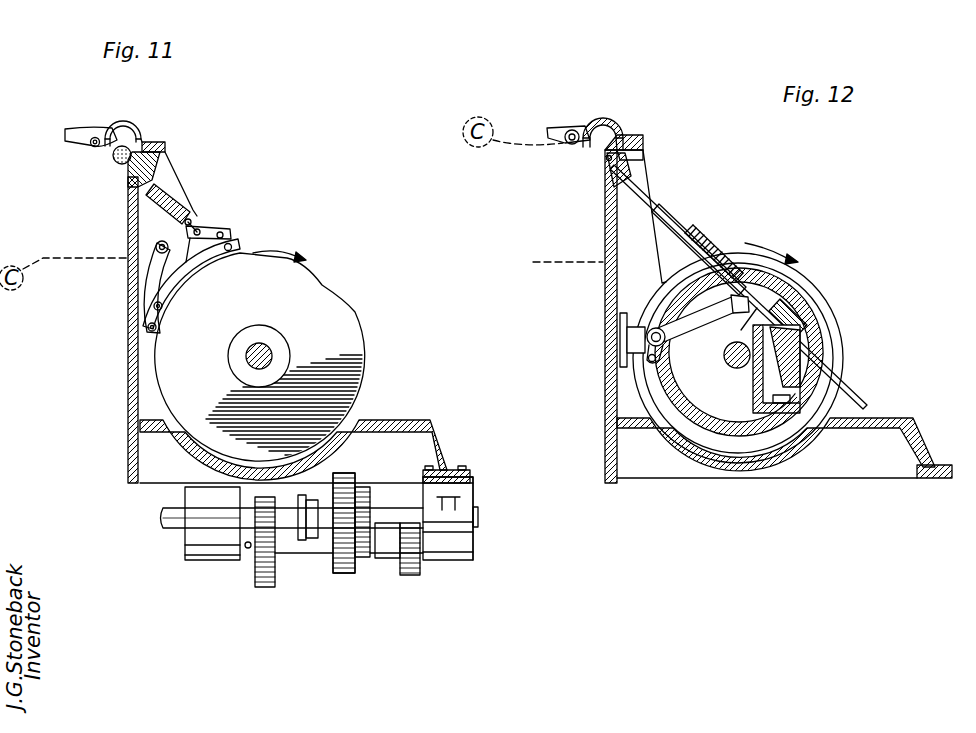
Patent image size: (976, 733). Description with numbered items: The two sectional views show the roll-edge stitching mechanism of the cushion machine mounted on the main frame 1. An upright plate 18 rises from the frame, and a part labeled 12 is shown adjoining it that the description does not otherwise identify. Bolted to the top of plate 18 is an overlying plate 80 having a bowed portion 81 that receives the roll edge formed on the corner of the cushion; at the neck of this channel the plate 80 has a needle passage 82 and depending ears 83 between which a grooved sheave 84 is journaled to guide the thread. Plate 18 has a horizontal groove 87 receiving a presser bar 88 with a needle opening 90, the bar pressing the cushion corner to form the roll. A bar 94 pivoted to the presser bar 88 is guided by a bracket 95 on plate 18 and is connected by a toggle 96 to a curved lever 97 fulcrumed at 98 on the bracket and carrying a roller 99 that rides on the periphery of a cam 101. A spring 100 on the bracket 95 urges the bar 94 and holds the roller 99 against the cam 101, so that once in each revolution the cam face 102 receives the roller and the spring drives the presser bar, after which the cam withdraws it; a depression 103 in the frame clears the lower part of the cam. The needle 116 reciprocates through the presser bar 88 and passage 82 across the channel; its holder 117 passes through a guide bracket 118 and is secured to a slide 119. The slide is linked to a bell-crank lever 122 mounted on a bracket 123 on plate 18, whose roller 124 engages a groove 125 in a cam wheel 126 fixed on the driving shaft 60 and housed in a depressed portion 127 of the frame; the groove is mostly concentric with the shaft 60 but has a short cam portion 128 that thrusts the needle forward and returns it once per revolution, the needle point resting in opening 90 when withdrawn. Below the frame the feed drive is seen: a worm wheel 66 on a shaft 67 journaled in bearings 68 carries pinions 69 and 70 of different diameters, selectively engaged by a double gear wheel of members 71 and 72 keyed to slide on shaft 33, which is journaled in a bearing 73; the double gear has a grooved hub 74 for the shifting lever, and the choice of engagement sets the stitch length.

In FIG. 11, the frame base 1 is at (443, 434).
In FIG. 12, the frame base 1 is at (917, 433).
In FIG. 12, the inclined plate 12 is at (644, 216).
In FIG. 11, the plate 18 is at (128, 358).
In FIG. 12, the plate 18 is at (605, 228).
In FIG. 11, the shaft 33 is at (160, 517).
In FIG. 11, the driving shaft 60 is at (266, 350).
In FIG. 12, the driving shaft 60 is at (800, 293).
In FIG. 11, the worm wheel 66 is at (268, 584).
In FIG. 11, the shaft 67 is at (381, 556).
In FIG. 11, the bearings 68 is at (223, 563).
In FIG. 11, the gear pinion 69 is at (343, 574).
In FIG. 11, the gear pinion 70 is at (417, 577).
In FIG. 11, the gear wheel member 71 is at (343, 483).
In FIG. 11, the gear wheel member 72 is at (361, 484).
In FIG. 11, the bearing 73 is at (476, 499).
In FIG. 11, the grooved hub 74 is at (312, 541).
In FIG. 11, the plate 80 is at (79, 128).
In FIG. 12, the plate 80 is at (561, 128).
In FIG. 11, the bowed portion 81 is at (134, 123).
In FIG. 12, the bowed portion 81 is at (601, 120).
In FIG. 12, the needle passage 82 is at (573, 132).
In FIG. 11, the depending ears 83 is at (88, 147).
In FIG. 12, the grooved sheave 84 is at (569, 131).
In FIG. 12, the horizontal groove 87 is at (610, 170).
In FIG. 11, the presser bar 88 is at (125, 165).
In FIG. 12, the presser bar 88 is at (620, 158).
In FIG. 12, the needle opening 90 is at (606, 158).
In FIG. 11, the bar 94 is at (210, 227).
In FIG. 11, the bracket 95 is at (174, 203).
In FIG. 11, the toggle 96 is at (232, 236).
In FIG. 11, the curved lever 97 is at (232, 250).
In FIG. 11, the fulcrum 98 is at (151, 307).
In FIG. 11, the roller 99 is at (148, 330).
In FIG. 11, the spring 100 is at (156, 245).
In FIG. 11, the cam 101 is at (260, 357).
In FIG. 11, the cam face 102 is at (318, 283).
In FIG. 11, the depression 103 is at (175, 421).
In FIG. 12, the needle 116 is at (650, 188).
In FIG. 12, the needle holder 117 is at (668, 216).
In FIG. 12, the guide bracket 118 is at (808, 327).
In FIG. 12, the slide 119 is at (702, 240).
In FIG. 12, the bell-crank lever 122 is at (695, 318).
In FIG. 12, the bracket 123 is at (620, 331).
In FIG. 12, the roller 124 is at (647, 369).
In FIG. 12, the cam groove 125 is at (832, 285).
In FIG. 12, the cam wheel 126 is at (776, 257).
In FIG. 12, the depressed portion 127 is at (743, 468).
In FIG. 12, the cam portion 128 is at (802, 384).